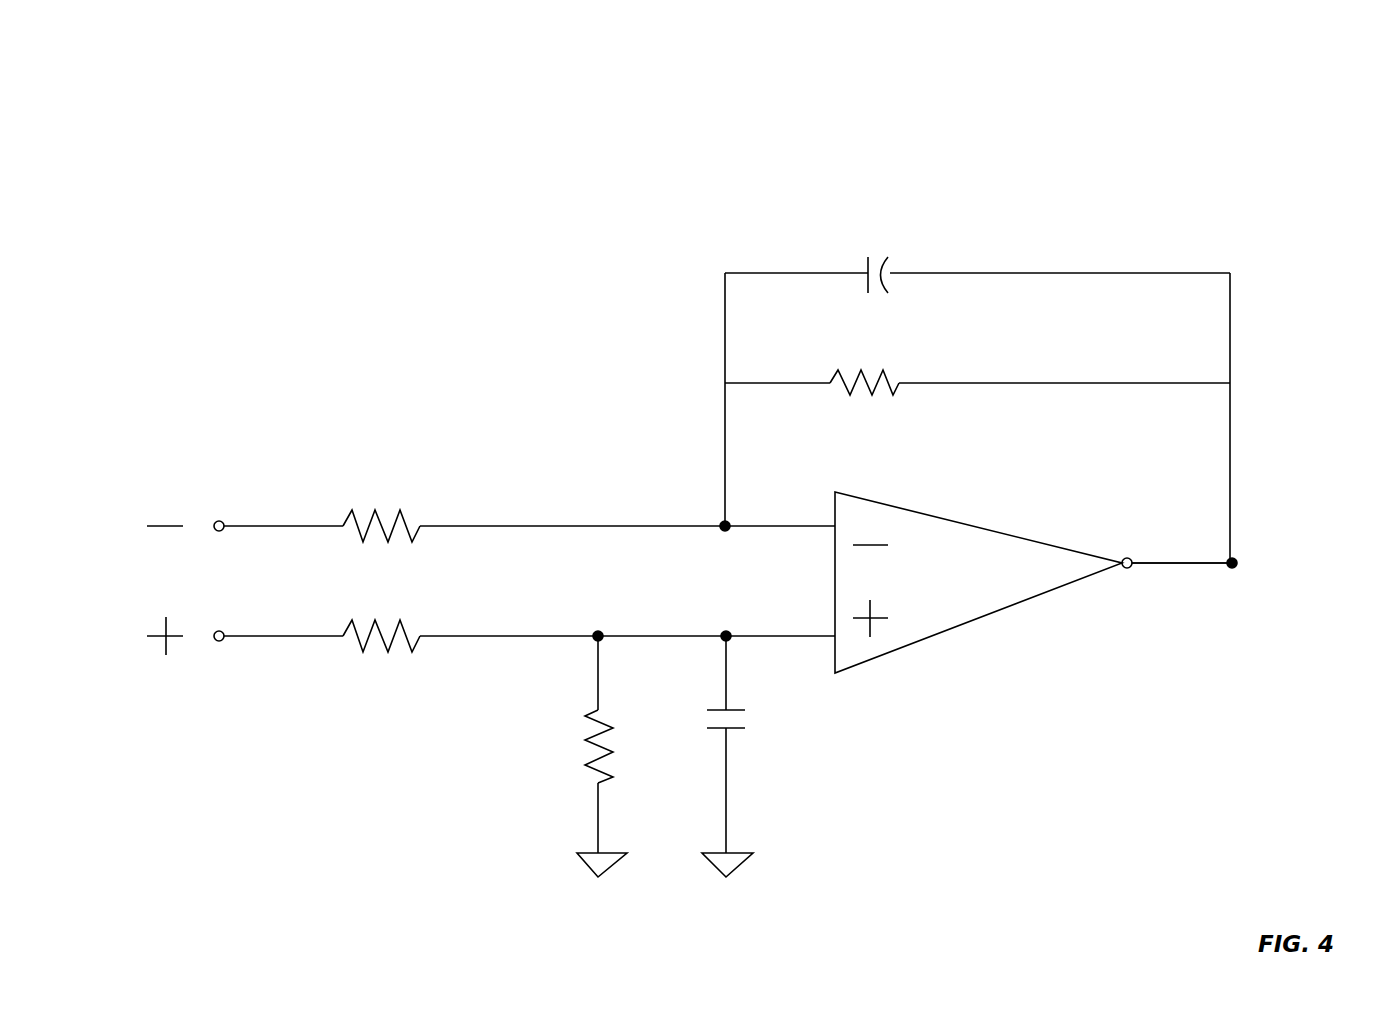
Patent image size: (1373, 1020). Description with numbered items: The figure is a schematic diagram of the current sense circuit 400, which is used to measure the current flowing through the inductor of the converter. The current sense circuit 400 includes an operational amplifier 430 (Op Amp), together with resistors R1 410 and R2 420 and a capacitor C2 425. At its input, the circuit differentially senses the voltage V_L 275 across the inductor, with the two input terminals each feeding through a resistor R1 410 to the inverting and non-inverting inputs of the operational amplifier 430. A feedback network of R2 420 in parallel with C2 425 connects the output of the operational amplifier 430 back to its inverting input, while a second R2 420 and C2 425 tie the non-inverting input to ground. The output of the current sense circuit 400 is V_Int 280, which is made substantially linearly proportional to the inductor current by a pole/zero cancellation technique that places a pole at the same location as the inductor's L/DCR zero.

The current sense circuit 400 is at (1212, 188).
The voltage V_L 275 is at (159, 588).
The R1 410 is at (384, 581).
The R2 420 is at (748, 565).
The C2 425 is at (846, 481).
The operational amplifier 430 is at (983, 582).
The V_Int 280 is at (1239, 565).